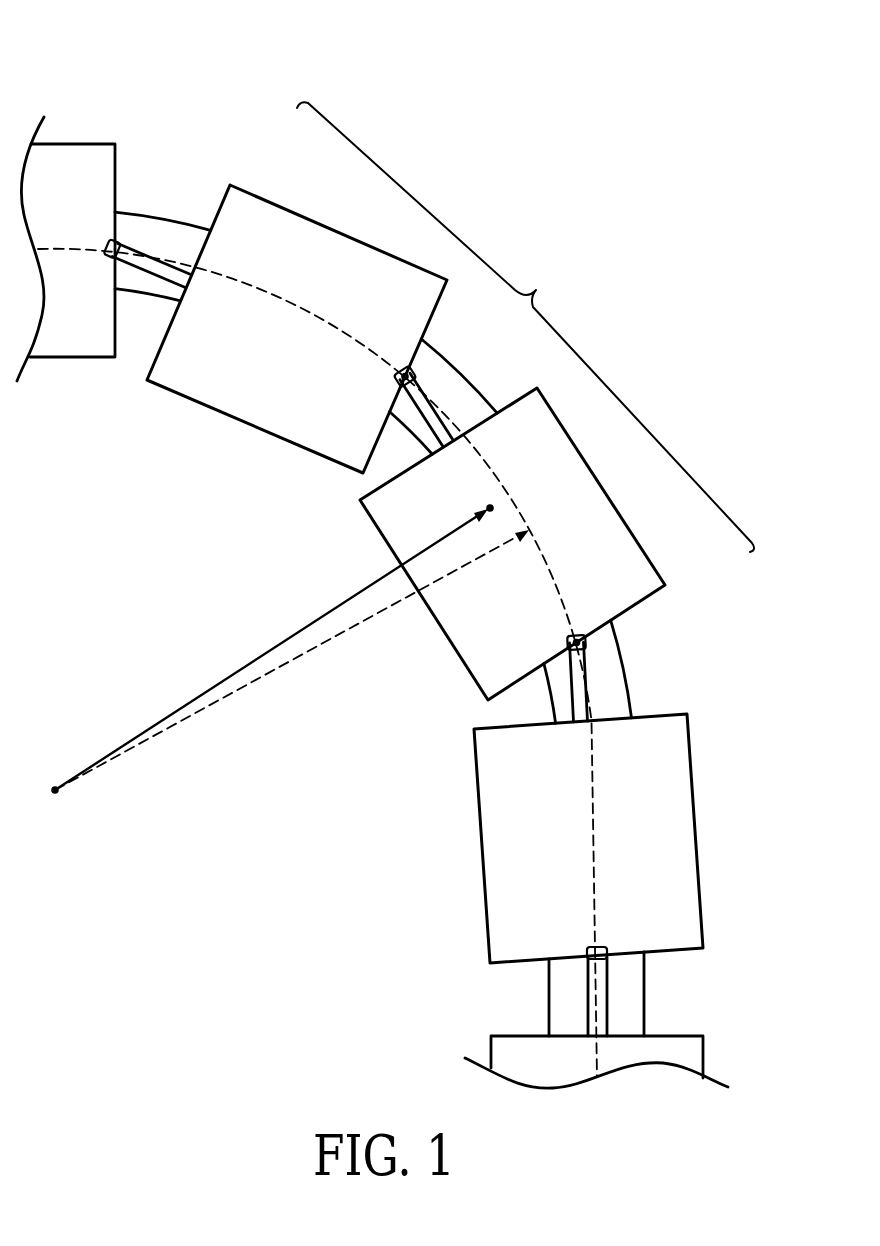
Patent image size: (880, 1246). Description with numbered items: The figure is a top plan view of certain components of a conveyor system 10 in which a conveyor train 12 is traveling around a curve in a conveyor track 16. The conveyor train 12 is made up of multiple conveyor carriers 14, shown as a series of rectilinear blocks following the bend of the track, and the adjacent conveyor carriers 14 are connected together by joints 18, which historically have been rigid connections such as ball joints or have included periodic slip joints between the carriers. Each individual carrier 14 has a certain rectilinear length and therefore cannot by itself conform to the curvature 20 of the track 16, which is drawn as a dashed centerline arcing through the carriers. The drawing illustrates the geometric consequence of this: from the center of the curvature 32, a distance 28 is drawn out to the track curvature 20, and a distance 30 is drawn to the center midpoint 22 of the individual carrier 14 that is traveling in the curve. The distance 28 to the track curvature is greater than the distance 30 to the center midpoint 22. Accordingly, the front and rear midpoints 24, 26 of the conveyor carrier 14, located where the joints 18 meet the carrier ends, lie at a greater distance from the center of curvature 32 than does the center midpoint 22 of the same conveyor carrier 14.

The conveyor system 10 is at (102, 56).
The conveyor train 12 is at (525, 327).
The conveyor carrier 14 is at (230, 387).
The conveyor track 16 is at (133, 285).
The joint 18 is at (133, 249).
The curvature 20 is at (597, 822).
The center midpoint 22 is at (492, 506).
The front midpoint 24 is at (409, 376).
The rear midpoint 26 is at (580, 642).
The distance from the center of curvature to the track curvature 28 is at (303, 655).
The distance from the center of curvature to the center midpoint 30 is at (290, 638).
The center of the curvature 32 is at (56, 793).